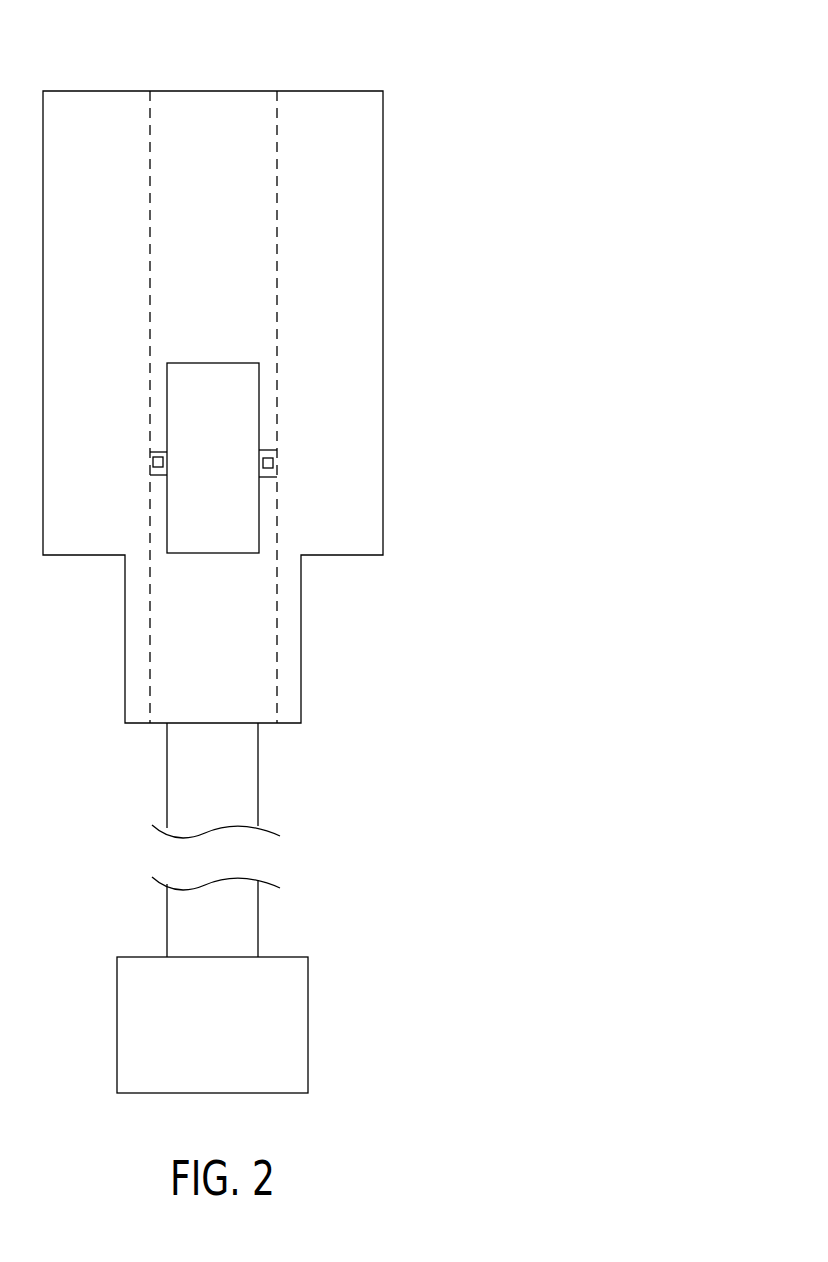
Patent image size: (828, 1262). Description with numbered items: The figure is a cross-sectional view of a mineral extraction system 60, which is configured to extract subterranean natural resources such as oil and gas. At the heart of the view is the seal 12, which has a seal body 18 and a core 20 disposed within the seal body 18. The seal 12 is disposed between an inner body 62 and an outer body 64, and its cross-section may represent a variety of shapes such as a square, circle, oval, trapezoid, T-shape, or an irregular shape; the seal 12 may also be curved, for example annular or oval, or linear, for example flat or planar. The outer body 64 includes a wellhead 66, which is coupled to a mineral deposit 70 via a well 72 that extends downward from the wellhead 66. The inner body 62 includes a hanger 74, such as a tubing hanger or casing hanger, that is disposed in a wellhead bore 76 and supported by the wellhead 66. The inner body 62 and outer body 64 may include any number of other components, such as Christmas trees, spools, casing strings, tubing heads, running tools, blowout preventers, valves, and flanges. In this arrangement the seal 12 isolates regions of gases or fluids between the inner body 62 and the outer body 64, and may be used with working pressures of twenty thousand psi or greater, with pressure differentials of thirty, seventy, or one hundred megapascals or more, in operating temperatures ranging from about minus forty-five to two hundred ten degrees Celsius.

The mineral extraction system 60 is at (445, 45).
The outer body 64 is at (264, 407).
The wellhead 66 is at (384, 149).
The wellhead bore 76 is at (278, 126).
The inner body 62 is at (160, 455).
The hanger 74 is at (167, 378).
The seal 12 is at (274, 463).
The seal body 18 is at (270, 472).
The core 20 is at (265, 478).
The well 72 is at (259, 776).
The mineral deposit 70 is at (309, 1048).